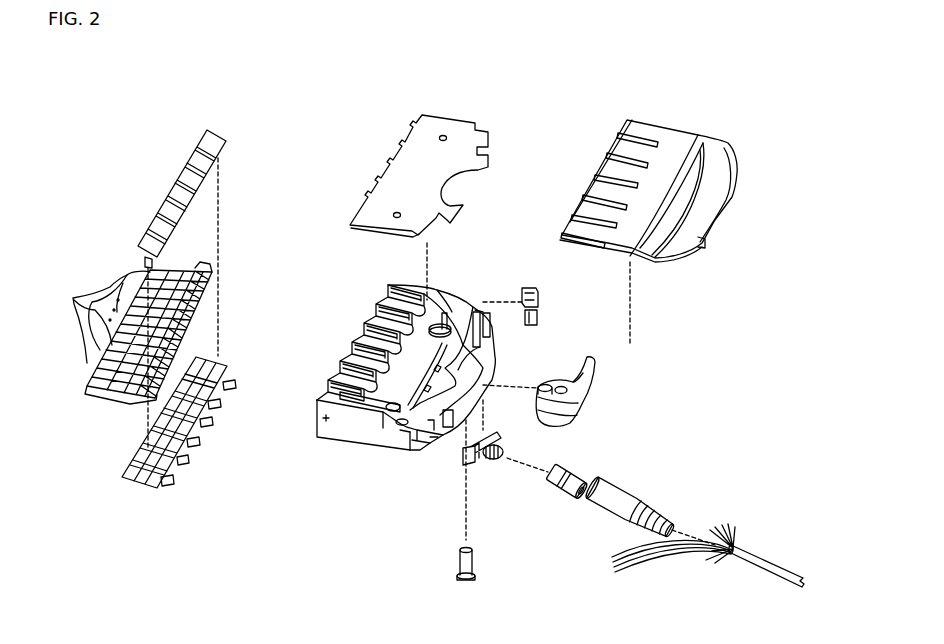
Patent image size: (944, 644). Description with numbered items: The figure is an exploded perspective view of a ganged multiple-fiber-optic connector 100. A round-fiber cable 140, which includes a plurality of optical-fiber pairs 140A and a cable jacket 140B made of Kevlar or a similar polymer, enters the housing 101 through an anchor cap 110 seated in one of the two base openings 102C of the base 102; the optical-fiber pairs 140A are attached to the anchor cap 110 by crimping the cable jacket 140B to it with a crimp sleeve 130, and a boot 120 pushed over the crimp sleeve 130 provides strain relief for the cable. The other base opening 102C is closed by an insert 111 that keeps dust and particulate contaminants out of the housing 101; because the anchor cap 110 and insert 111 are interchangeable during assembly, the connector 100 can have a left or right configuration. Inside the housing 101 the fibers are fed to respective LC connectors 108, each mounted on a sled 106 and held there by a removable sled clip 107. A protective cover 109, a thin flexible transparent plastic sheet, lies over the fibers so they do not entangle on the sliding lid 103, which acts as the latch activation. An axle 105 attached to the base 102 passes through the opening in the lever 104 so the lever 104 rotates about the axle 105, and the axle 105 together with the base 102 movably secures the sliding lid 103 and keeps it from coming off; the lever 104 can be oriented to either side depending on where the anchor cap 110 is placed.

The ganged multiple-fiber-optic connector 100 is at (818, 95).
The housing 101 is at (319, 453).
The base 102 is at (354, 433).
The base opening 102C is at (489, 329).
The sliding lid 103 is at (738, 152).
The lever 104 is at (598, 369).
The axle 105 is at (458, 558).
The sled 106 is at (248, 362).
The sled clip 107 is at (200, 118).
The LC connectors 108 is at (117, 333).
The protective cover 109 is at (367, 203).
The anchor cap 110 is at (483, 459).
The insert 111 is at (522, 295).
The boot 120 is at (447, 527).
The crimp sleeve 130 is at (566, 470).
The round-fiber cable 140 is at (749, 563).
The optical-fiber pairs 140A is at (614, 578).
The cable jacket 140B is at (733, 536).